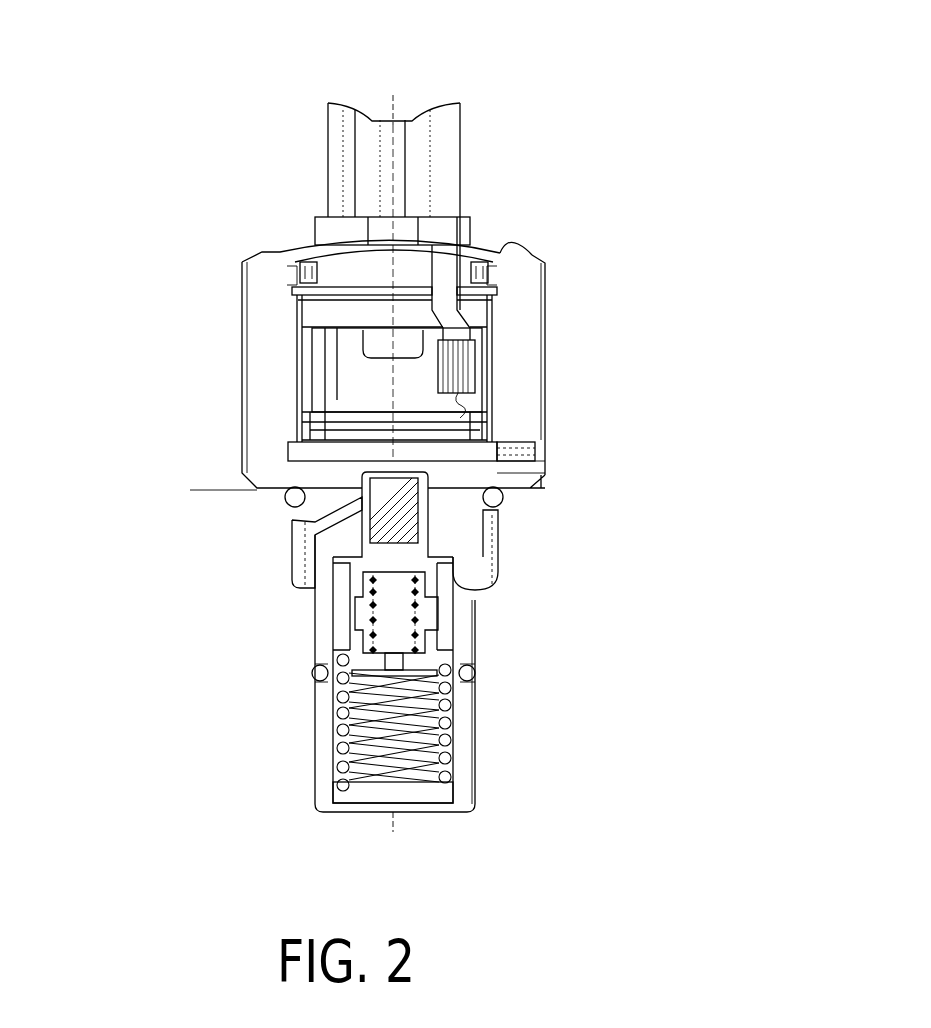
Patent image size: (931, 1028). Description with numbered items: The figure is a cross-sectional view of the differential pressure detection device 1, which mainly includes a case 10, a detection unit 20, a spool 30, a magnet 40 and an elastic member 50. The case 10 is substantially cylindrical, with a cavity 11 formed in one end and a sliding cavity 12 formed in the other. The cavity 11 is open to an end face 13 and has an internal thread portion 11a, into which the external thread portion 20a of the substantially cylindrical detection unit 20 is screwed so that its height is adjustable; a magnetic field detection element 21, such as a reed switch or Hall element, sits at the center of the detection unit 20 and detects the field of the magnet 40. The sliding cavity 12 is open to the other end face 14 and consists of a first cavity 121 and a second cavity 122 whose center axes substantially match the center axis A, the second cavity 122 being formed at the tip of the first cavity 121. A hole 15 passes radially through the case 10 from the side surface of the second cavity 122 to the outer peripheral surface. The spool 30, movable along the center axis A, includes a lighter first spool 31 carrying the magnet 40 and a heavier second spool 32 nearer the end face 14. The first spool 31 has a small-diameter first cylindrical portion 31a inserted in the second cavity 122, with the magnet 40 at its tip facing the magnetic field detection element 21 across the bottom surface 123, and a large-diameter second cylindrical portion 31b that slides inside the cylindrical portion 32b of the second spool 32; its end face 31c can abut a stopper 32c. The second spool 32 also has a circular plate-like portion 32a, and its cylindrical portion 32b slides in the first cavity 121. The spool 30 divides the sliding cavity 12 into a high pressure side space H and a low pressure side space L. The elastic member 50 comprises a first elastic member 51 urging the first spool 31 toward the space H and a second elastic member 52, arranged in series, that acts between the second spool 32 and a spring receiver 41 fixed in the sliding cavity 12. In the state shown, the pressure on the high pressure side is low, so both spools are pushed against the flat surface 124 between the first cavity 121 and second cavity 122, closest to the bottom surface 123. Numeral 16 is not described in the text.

The differential pressure detection device 1 is at (597, 45).
The center axis A is at (398, 101).
The case 10 is at (556, 372).
The cavity 11 is at (318, 445).
The internal thread portion 11a is at (312, 322).
The sliding cavity 12 is at (603, 511).
The first cavity 121 is at (430, 547).
The second cavity 122 is at (430, 494).
The bottom surface 123 is at (530, 473).
The flat surface 124 is at (480, 605).
The end face 13 is at (513, 240).
The other end face 14 is at (448, 808).
The hole 15 is at (300, 519).
The lower housing 16 is at (475, 565).
The detection unit 20 is at (462, 177).
The external thread portion 20a is at (325, 372).
The magnetic field detection element 21 is at (345, 400).
The spool 30 is at (75, 725).
The first spool 31 is at (133, 653).
The first cylindrical portion 31a is at (365, 573).
The second cylindrical portion 31b is at (357, 600).
The end face 31c is at (362, 612).
The second spool 32 is at (133, 740).
The plate-like portion 32a is at (385, 654).
The cylindrical portion 32b is at (356, 628).
The stopper 32c is at (362, 645).
The magnet 40 is at (365, 473).
The spring receiver 41 is at (340, 790).
The elastic member 50 is at (570, 649).
The first elastic member 51 is at (472, 668).
The second elastic member 52 is at (455, 733).
The space in the high pressure side H is at (215, 493).
The space in the low pressure side L is at (378, 765).